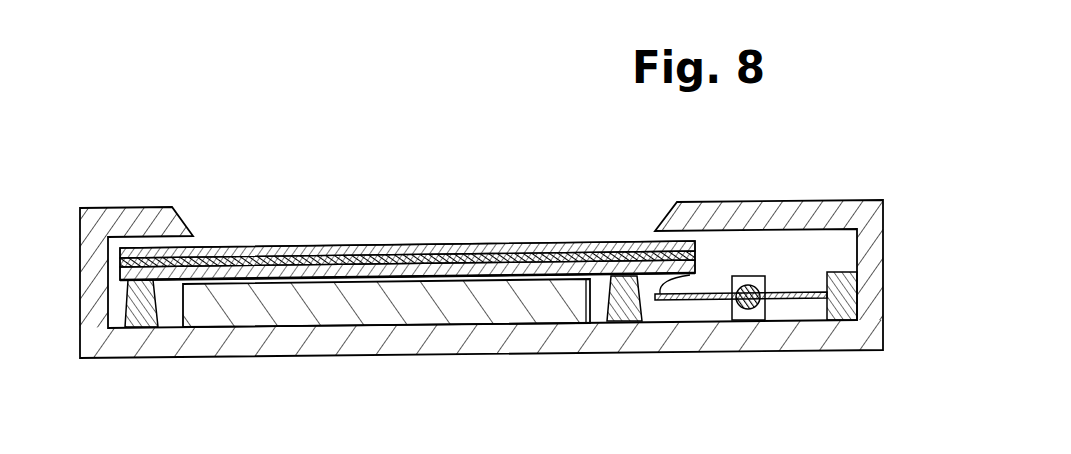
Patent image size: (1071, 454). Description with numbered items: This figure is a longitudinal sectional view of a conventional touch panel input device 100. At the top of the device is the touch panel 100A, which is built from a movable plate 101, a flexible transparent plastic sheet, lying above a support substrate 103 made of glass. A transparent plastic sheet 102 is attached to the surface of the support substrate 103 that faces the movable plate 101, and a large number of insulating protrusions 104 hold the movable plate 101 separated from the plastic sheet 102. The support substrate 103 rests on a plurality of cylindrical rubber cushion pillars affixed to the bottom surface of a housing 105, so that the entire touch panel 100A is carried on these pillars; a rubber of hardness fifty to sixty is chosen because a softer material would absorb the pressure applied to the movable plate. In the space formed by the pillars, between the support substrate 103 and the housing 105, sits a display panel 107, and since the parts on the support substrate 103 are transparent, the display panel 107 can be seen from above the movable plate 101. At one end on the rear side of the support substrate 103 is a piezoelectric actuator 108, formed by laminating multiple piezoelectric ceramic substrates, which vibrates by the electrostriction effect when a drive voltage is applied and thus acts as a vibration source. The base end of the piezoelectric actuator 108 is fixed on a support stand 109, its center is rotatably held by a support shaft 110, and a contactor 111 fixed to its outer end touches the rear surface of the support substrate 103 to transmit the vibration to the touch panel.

The touch panel input device 100 is at (430, 152).
The touch panel 100A is at (563, 127).
The movable plate 101 is at (440, 243).
The transparent plastic sheet 102 is at (479, 243).
The support substrate 103 is at (497, 243).
The insulating protrusions 104 is at (227, 258).
The housing 105 is at (456, 336).
The display panel 107 is at (382, 300).
The piezoelectric actuator 108 is at (778, 302).
The support stand 109 is at (850, 292).
The support shaft 110 is at (740, 276).
The contactor 111 is at (662, 293).